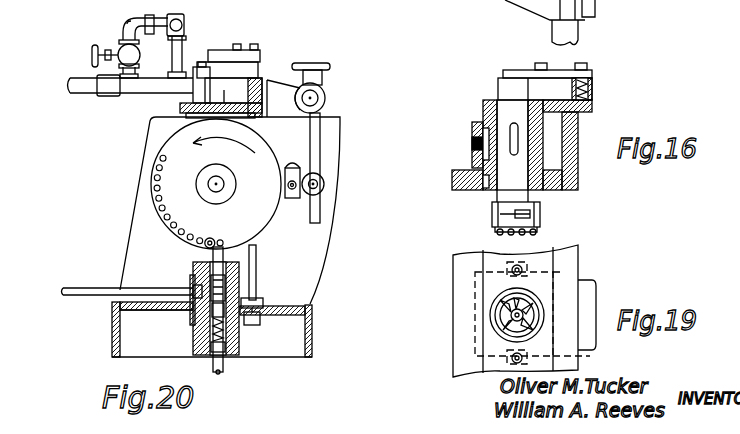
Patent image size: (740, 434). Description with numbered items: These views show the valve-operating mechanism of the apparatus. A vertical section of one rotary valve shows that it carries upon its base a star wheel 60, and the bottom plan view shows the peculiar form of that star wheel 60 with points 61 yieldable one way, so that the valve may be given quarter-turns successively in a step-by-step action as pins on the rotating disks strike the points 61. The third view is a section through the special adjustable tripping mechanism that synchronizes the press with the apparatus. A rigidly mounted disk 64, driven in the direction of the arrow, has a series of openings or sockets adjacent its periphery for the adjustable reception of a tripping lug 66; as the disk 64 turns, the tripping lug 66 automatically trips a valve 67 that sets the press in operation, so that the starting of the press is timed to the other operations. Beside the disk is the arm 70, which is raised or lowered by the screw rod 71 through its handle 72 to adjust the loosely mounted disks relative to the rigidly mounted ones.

In FIG. 16, the star wheel 60 is at (525, 213).
In FIG. 19, the points 61 is at (526, 304).
In FIG. 20, the disk 64 is at (166, 147).
In FIG. 20, the tripping lug 66 is at (215, 240).
In FIG. 20, the valve 67 is at (256, 254).
In FIG. 20, the arm 70 is at (324, 183).
In FIG. 20, the screw rod 71 is at (318, 130).
In FIG. 20, the handle 72 is at (306, 63).